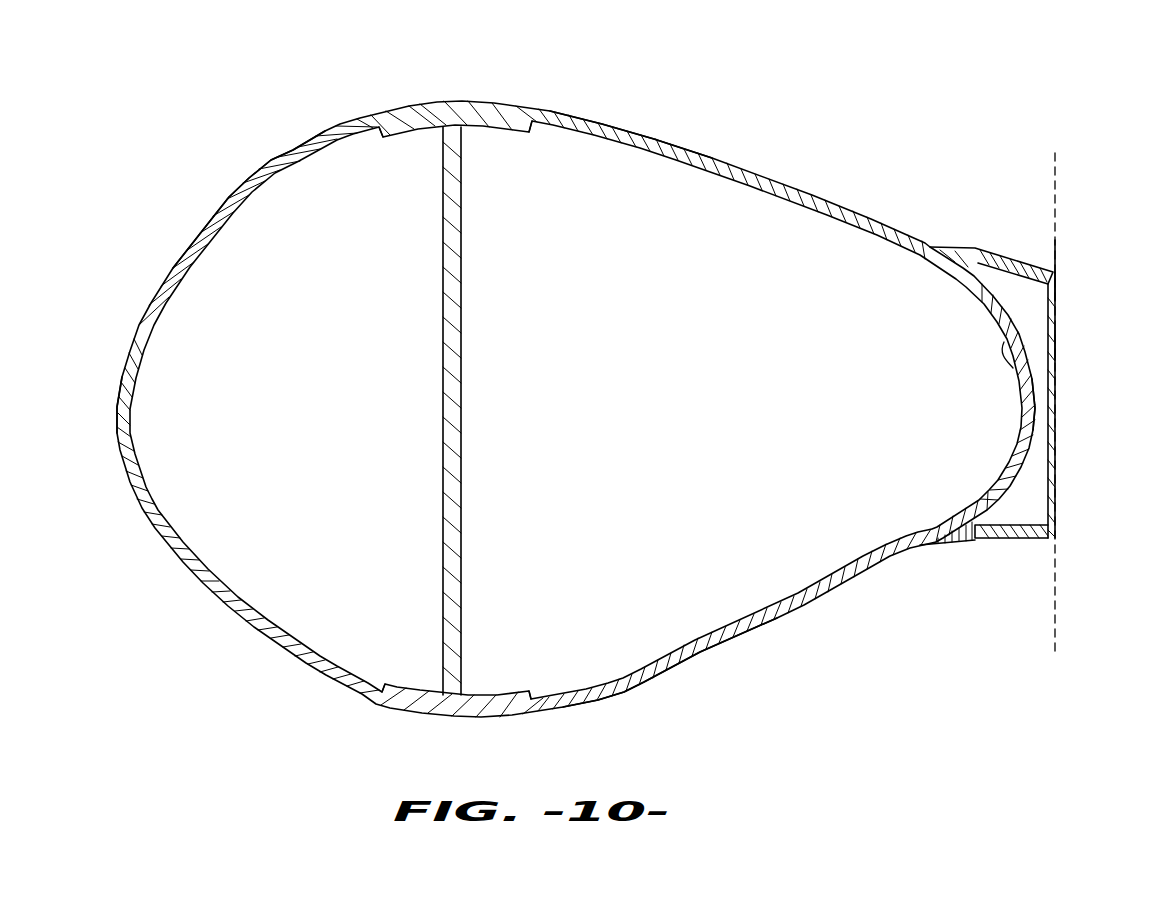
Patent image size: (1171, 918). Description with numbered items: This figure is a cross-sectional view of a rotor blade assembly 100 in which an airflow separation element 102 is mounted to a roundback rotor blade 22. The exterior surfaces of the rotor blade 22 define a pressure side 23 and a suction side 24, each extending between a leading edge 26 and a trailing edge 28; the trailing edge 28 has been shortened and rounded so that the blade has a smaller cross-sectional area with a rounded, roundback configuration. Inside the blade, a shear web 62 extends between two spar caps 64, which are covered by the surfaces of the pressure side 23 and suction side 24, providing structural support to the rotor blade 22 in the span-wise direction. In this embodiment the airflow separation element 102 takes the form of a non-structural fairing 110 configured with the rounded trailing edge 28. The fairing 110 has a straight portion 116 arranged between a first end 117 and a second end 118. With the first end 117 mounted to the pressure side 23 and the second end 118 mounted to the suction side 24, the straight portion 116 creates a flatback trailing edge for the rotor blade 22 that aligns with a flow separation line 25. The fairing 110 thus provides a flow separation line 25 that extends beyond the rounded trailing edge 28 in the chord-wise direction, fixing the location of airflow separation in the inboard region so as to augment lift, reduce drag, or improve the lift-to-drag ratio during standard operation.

The rotor blade assembly 100 is at (860, 100).
The rotor blade 22 is at (272, 158).
The pressure side 23 is at (617, 122).
The suction side 24 is at (622, 688).
The flow separation line 25 is at (1057, 183).
The leading edge 26 is at (115, 415).
The trailing edge 28 is at (1035, 397).
The shear web 62 is at (443, 375).
The spar caps 64 is at (405, 135).
The airflow separation element 102 is at (1057, 249).
The non-structural fairing 110 is at (1058, 311).
The straight portion 116 is at (1062, 345).
The first end 117 is at (1007, 250).
The second end 118 is at (1020, 542).